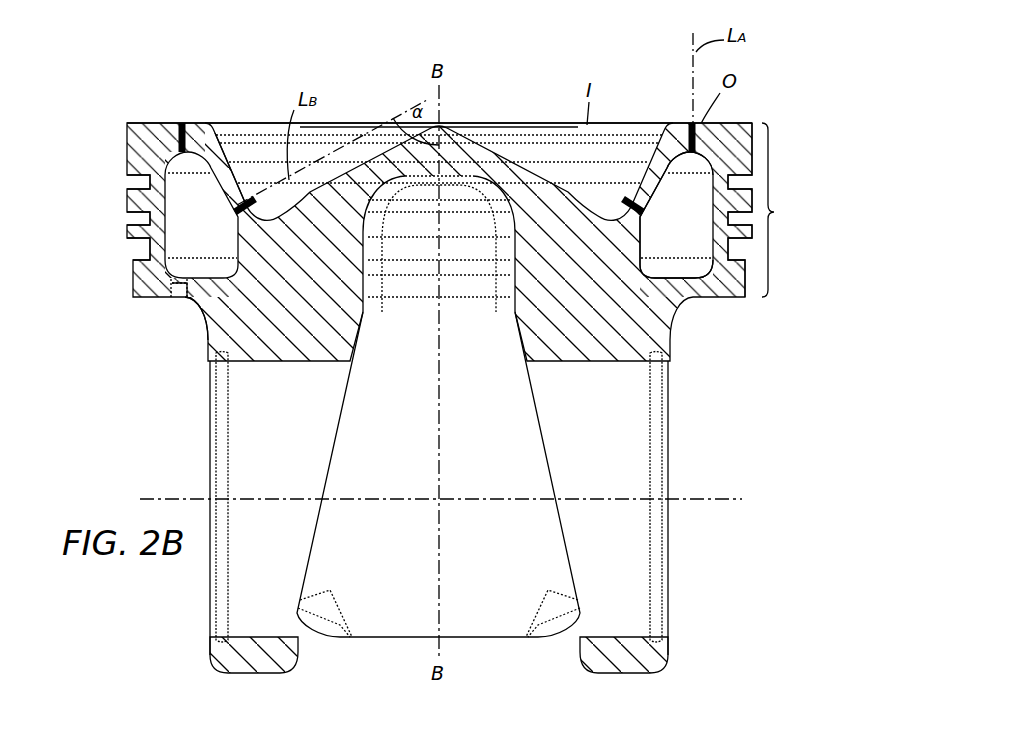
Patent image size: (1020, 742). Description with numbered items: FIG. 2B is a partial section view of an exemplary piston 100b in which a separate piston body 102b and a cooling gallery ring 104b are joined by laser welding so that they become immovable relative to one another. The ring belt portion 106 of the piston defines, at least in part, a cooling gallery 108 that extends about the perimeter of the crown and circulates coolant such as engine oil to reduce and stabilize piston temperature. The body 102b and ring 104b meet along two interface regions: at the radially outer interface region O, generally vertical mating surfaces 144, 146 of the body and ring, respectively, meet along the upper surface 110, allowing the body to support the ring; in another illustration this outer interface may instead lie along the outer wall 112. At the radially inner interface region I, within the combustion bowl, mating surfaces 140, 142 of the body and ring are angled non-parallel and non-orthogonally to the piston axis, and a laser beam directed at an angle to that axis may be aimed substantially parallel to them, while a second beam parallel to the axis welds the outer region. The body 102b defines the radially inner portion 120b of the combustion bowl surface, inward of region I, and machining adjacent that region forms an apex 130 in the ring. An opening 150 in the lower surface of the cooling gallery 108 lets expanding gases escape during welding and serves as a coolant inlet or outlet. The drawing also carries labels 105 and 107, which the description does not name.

The piston 100b is at (237, 38).
The piston body 102b is at (230, 318).
The cooling gallery ring 104b is at (633, 198).
The skirt 105 is at (255, 654).
The ring belt portion 106 is at (770, 210).
The ring grooves 107 is at (137, 250).
The cooling gallery 108 is at (190, 242).
The upper surface 110 is at (691, 123).
The outer wall 112 is at (133, 148).
The radially inner portion of the combustion bowl surface 120b is at (526, 108).
The apex 130 is at (232, 178).
The radially inner mating surface of the body 140 is at (587, 128).
The radially inner mating surface of the ring 142 is at (643, 150).
The radially outer mating surface of the body 144 is at (720, 126).
The radially outer mating surface of the ring 146 is at (700, 282).
The opening 150 is at (181, 298).